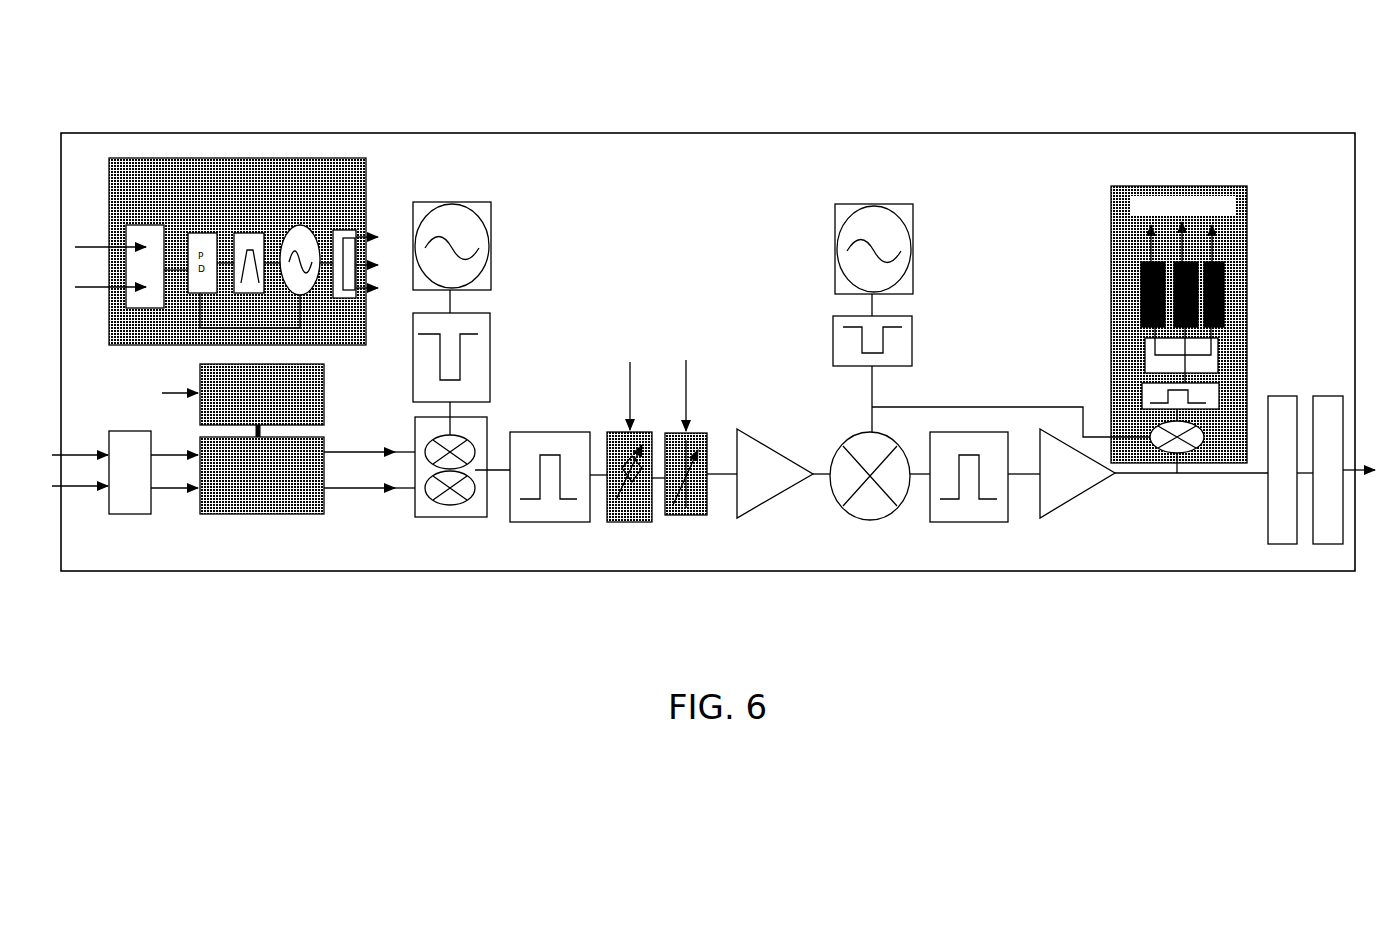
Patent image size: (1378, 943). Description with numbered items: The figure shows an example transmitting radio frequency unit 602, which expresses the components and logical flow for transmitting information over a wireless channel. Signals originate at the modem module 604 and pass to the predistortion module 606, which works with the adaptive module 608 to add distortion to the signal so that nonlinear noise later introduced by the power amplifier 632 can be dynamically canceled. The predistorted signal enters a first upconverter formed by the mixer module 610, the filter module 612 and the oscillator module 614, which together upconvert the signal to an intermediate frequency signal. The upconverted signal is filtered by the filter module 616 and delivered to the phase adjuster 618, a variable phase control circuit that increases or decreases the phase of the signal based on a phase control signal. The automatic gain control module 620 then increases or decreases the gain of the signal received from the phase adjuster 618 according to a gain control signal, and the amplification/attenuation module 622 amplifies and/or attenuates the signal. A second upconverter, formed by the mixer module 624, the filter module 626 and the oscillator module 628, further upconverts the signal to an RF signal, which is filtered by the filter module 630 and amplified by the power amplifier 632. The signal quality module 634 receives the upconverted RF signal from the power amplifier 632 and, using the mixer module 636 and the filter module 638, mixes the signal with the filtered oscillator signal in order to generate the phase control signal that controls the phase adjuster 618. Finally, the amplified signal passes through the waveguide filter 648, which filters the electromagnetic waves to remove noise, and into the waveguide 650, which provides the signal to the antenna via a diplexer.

The transmitting radio frequency unit 602 is at (62, 133).
The modem module 604 is at (138, 514).
The predistortion module 606 is at (268, 514).
The adaptive module 608 is at (324, 413).
The mixer module 610 is at (453, 517).
The filter module 612 is at (490, 390).
The oscillator module 614 is at (490, 278).
The filter module 616 is at (548, 522).
The phase adjuster 618 is at (630, 522).
The automatic gain control (AGC) module 620 is at (685, 515).
The amplification/attenuation module 622 is at (757, 508).
The mixer module 624 is at (872, 520).
The filter module 626 is at (912, 350).
The oscillator module 628 is at (913, 278).
The filter module 630 is at (970, 522).
The power amplifier 632 is at (1046, 514).
The signal quality module 634 is at (1247, 200).
The mixer module 636 is at (1200, 445).
The filter module 638 is at (1219, 395).
The waveguide filter 648 is at (1281, 544).
The waveguide 650 is at (1337, 544).